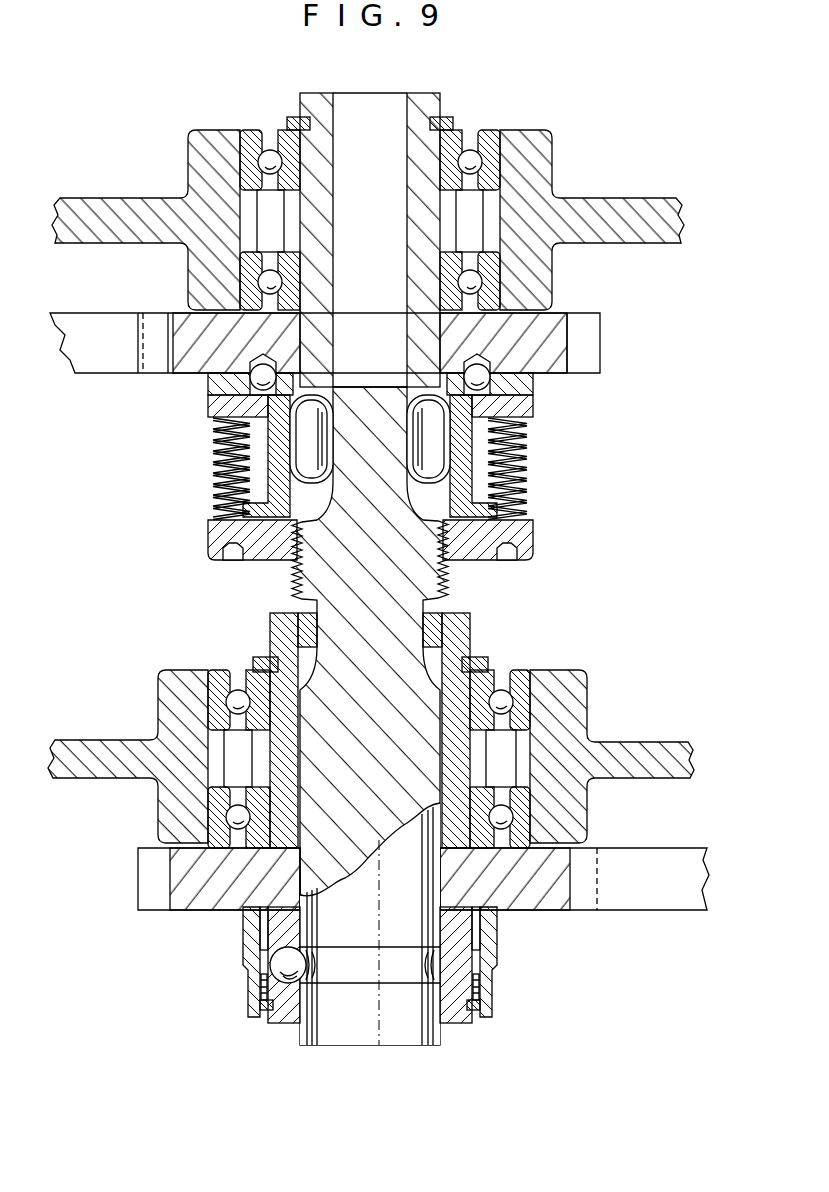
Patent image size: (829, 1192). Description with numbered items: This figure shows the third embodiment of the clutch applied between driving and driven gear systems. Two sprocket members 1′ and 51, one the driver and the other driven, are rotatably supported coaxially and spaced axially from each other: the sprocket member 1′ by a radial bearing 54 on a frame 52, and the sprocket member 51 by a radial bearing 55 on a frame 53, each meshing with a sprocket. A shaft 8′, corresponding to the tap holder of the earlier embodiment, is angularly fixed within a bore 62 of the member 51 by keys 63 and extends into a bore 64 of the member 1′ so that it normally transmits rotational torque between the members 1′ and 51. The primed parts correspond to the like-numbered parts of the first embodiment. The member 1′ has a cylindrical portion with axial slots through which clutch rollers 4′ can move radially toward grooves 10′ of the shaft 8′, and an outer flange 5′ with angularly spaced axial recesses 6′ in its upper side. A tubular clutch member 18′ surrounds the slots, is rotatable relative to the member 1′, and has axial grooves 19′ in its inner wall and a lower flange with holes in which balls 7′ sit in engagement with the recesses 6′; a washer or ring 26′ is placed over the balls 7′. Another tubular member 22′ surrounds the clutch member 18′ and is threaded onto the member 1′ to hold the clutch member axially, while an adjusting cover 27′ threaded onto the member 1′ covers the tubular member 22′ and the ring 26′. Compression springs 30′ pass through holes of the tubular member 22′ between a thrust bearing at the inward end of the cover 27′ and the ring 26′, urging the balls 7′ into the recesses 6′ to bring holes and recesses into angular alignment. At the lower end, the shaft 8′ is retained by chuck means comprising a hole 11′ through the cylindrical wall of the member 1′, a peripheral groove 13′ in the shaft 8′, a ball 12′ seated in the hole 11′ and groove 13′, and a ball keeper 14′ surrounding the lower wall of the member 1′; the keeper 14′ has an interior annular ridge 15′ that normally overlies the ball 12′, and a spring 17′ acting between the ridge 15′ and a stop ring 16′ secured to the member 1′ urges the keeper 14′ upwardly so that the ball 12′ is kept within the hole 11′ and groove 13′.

The sprocket member 1′ is at (432, 233).
The clutch roller 4′ is at (432, 445).
The outer flange 5′ is at (558, 360).
The axial recess 6′ is at (477, 352).
The ball 7′ is at (490, 382).
The shaft 8′ is at (400, 625).
The groove 10′ is at (438, 493).
The hole 11′ is at (265, 940).
The ball 12′ is at (287, 962).
The peripheral groove 13′ is at (332, 980).
The ball keeper 14′ is at (495, 955).
The interior annular ridge 15′ is at (483, 928).
The stop ring 16′ is at (478, 1013).
The spring 17′ is at (478, 987).
The tubular clutch member 18′ is at (273, 457).
The axial groove 19′ is at (220, 388).
The tubular member 22′ is at (450, 570).
The washer or ring 26′ is at (208, 405).
The adjusting cover 27′ is at (523, 540).
The compression spring 30′ is at (522, 508).
The sprocket member 51 is at (458, 753).
The frame 52 is at (107, 212).
The frame 53 is at (642, 750).
The radial bearing 54 is at (253, 135).
The radial bearing 55 is at (222, 672).
The bore 62 is at (273, 650).
The key 63 is at (303, 600).
The bore 64 is at (210, 527).